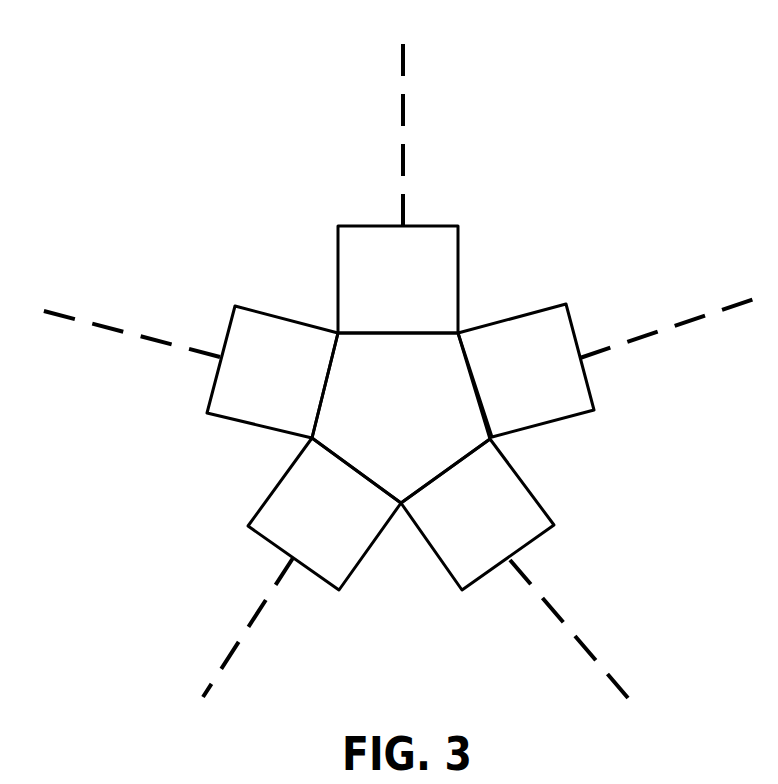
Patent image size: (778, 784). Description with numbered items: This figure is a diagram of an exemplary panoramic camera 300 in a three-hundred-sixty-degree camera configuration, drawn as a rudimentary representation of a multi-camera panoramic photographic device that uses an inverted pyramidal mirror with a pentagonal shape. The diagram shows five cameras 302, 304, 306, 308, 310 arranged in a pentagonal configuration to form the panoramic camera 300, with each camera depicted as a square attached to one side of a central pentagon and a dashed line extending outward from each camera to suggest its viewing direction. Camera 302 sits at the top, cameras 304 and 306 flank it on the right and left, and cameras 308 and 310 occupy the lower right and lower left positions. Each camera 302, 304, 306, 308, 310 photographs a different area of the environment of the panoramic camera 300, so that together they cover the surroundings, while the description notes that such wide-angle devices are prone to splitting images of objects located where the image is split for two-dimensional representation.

The panoramic camera 300 is at (398, 369).
The camera 302 is at (330, 186).
The camera 304 is at (607, 341).
The camera 306 is at (189, 343).
The camera 308 is at (546, 568).
The camera 310 is at (256, 567).